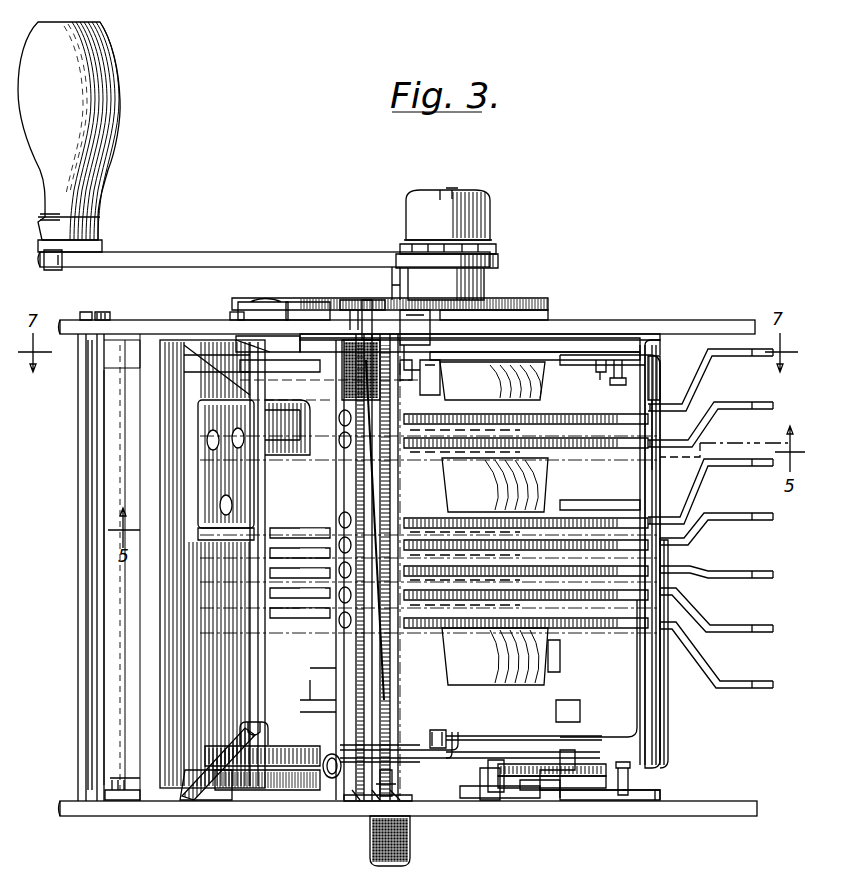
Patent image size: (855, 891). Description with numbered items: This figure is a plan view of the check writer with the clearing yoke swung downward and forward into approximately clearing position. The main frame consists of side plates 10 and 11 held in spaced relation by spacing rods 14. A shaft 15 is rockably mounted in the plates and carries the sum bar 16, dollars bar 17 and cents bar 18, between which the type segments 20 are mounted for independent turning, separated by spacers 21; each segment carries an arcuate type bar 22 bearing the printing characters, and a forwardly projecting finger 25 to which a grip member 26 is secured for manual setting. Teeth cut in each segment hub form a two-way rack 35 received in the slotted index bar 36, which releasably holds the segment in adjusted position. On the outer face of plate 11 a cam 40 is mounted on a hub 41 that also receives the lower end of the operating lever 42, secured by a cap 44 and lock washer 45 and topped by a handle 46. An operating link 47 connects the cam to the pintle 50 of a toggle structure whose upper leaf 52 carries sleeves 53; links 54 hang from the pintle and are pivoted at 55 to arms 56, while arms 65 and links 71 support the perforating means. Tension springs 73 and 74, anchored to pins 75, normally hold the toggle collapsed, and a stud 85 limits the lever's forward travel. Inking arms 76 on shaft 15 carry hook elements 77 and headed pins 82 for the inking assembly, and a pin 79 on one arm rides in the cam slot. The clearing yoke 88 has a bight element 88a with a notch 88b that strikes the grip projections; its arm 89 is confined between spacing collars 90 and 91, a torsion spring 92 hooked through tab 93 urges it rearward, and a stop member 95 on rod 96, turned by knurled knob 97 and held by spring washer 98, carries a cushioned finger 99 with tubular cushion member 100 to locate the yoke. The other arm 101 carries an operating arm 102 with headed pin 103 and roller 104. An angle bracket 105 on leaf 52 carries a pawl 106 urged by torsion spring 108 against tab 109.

The side plate 10 is at (672, 816).
The side plate 11 is at (686, 320).
The spacing rods 14 is at (86, 682).
The shaft 15 is at (520, 330).
The sum bar 16 is at (556, 666).
The dollars bar 17 is at (530, 482).
The cents bar 18 is at (535, 374).
The type segments 20 is at (478, 414).
The spacers 21 is at (470, 535).
The arcuate type bar 22 is at (308, 440).
The finger 25 is at (672, 445).
The grip member 26 is at (722, 352).
The two-way rack 35 is at (568, 530).
The index bar 36 is at (350, 674).
The cam 40 is at (540, 299).
The hub 41 is at (485, 281).
The operating lever 42 is at (222, 266).
The cap 44 is at (488, 208).
The lock washer 45 is at (494, 247).
The handle 46 is at (112, 83).
The operating link 47 is at (250, 338).
The pintle 50 is at (268, 300).
The upper leaf 52 is at (198, 604).
The sleeves 53 is at (334, 690).
The links 54 is at (236, 788).
The pivot 55 is at (124, 802).
The arms 56 is at (204, 786).
The arms 65 is at (290, 712).
The links 71 is at (264, 768).
The tension spring 73 is at (302, 792).
The tension spring 74 is at (328, 780).
The pins 75 is at (550, 795).
The inking arms 76 is at (612, 336).
The hook elements 77 is at (660, 790).
The pin 79 is at (360, 320).
The headed pin 82 is at (618, 378).
The stud 85 is at (352, 330).
The clearing yoke 88 is at (672, 716).
The bight element 88a is at (656, 688).
The notch 88b is at (651, 470).
The arm 89 is at (590, 770).
The spacing collar 90 is at (560, 712).
The spacing collar 91 is at (556, 748).
The torsion spring 92 is at (510, 800).
The tab 93 is at (576, 754).
The stop member 95 is at (358, 750).
The rod 96 is at (386, 792).
The knurled knob 97 is at (384, 862).
The spring washer 98 is at (370, 802).
The finger 99 is at (448, 736).
The tubular cushion member 100 is at (438, 730).
The arm 101 is at (596, 372).
The operating arm 102 is at (566, 336).
The headed pin 103 is at (422, 378).
The roller 104 is at (415, 365).
The angle bracket 105 is at (208, 480).
The pawl 106 is at (325, 348).
The torsion spring 108 is at (338, 340).
The tab 109 is at (275, 355).